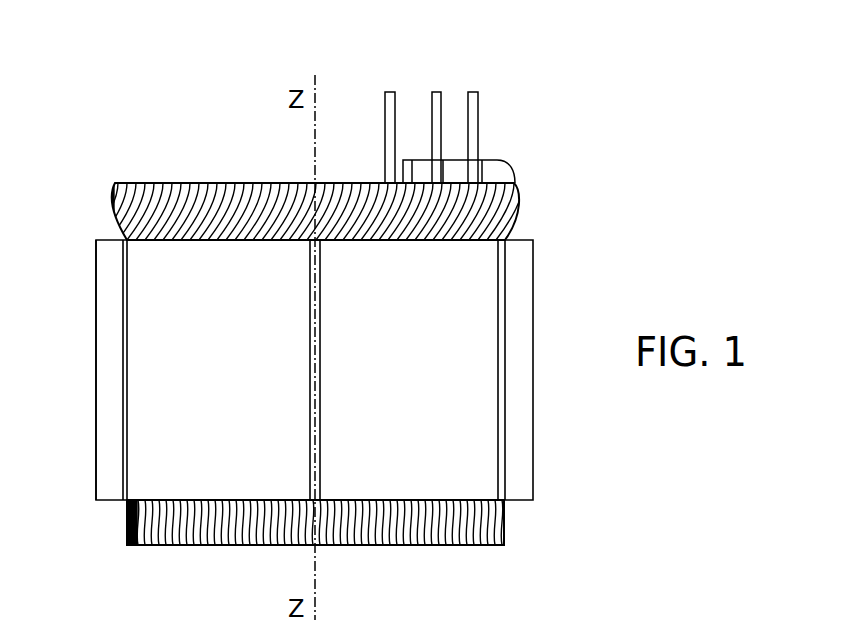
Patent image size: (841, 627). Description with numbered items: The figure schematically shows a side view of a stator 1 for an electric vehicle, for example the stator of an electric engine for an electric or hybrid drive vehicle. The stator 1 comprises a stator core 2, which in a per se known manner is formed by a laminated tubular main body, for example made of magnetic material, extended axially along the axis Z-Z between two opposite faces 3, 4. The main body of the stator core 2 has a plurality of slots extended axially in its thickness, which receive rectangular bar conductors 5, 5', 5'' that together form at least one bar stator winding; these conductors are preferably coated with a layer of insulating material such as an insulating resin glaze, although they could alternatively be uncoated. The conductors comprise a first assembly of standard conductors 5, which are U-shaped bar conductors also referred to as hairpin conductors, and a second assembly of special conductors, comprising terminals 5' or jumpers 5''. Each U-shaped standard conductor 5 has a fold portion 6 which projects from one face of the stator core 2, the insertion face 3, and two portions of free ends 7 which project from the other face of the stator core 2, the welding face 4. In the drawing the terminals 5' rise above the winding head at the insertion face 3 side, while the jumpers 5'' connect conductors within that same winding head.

The stator 1 is at (110, 125).
The stator core 2 is at (96, 350).
The insertion face 3 is at (100, 240).
The welding face 4 is at (113, 500).
The standard conductors 5 is at (341, 359).
The terminals 5' is at (434, 100).
The jumpers 5'' is at (484, 130).
The fold portion 6 is at (236, 183).
The free ends 7 is at (190, 548).